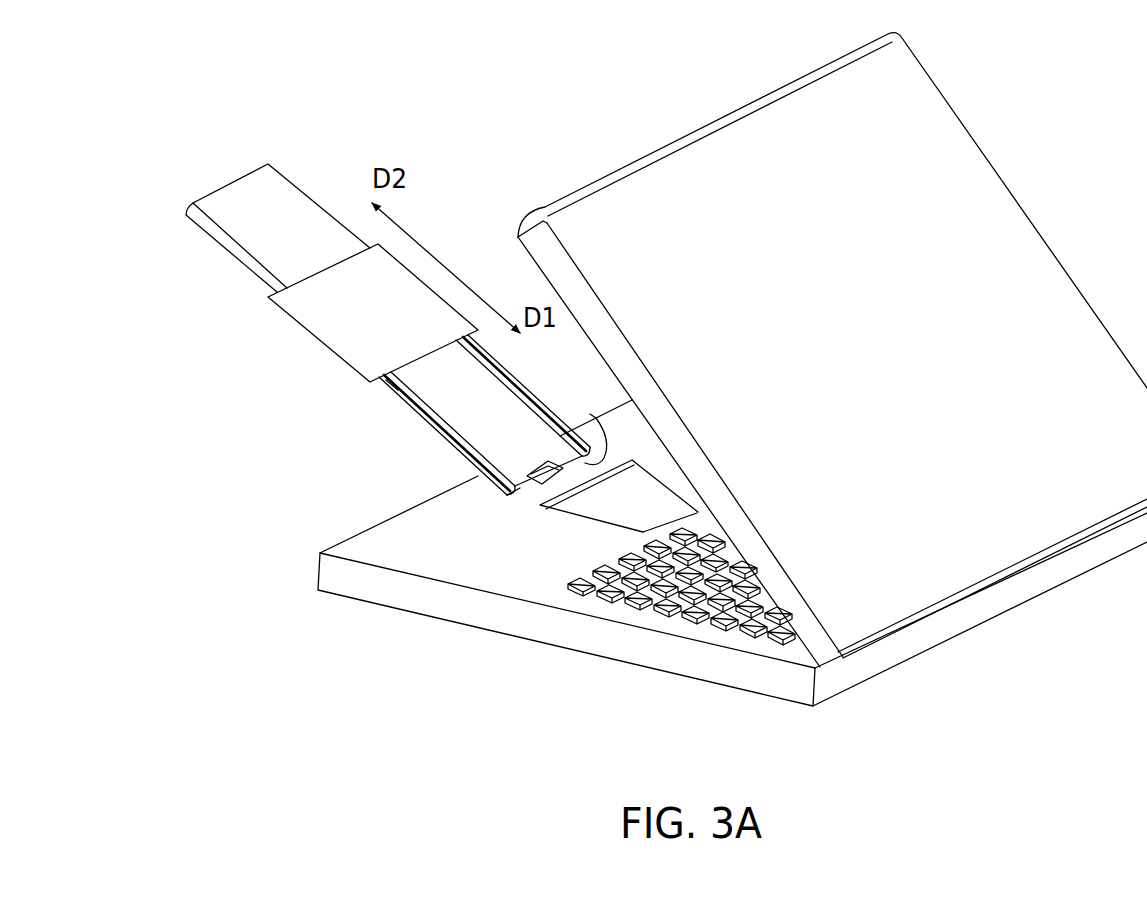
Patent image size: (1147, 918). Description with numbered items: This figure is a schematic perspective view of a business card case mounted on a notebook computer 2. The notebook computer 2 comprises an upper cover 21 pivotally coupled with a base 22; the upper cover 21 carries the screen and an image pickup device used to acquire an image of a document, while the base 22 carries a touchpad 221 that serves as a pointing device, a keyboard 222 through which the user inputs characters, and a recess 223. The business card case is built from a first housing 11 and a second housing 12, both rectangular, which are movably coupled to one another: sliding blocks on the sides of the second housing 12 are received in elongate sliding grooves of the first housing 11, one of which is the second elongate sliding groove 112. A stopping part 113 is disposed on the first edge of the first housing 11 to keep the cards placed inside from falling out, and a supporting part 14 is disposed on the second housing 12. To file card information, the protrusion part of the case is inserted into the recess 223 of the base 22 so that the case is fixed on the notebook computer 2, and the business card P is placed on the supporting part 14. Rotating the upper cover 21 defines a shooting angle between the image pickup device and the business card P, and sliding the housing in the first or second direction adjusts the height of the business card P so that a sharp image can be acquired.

The notebook computer 2 is at (960, 193).
The upper cover 21 is at (813, 132).
The base 22 is at (463, 565).
The touchpad 221 is at (605, 503).
The keyboard 222 is at (755, 622).
The recess 223 is at (563, 426).
The first housing 11 is at (465, 413).
The second elongate sliding groove 112 is at (413, 420).
The stopping part 113 is at (482, 473).
The supporting part 14 is at (392, 396).
The second housing 12 is at (250, 197).
The business card P is at (333, 333).